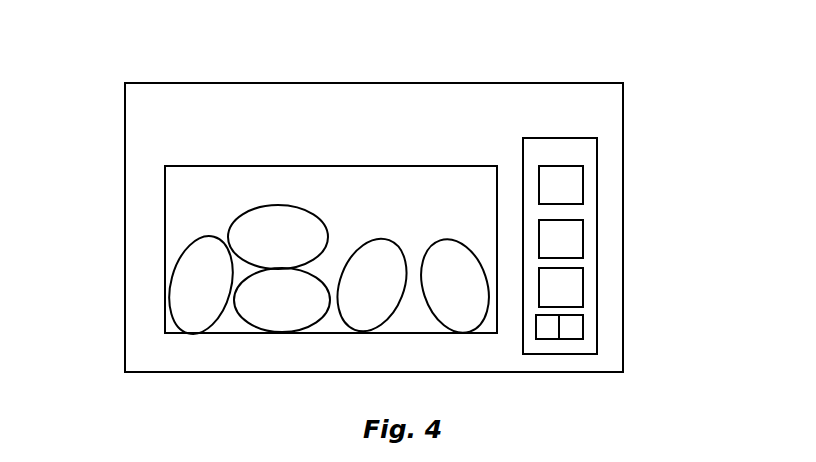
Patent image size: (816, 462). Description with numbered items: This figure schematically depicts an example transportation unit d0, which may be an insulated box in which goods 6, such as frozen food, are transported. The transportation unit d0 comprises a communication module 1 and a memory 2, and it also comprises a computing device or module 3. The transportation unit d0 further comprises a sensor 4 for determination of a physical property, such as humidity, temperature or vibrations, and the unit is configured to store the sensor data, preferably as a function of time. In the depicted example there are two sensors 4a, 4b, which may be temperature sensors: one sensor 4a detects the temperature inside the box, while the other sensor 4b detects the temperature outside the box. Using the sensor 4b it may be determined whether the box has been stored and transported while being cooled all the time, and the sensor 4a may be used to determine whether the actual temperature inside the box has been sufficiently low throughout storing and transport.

The transportation unit d0 is at (590, 105).
The communication module 1 is at (573, 187).
The memory 2 is at (570, 245).
The computing device or module 3 is at (570, 290).
The sensor 4 is at (583, 330).
The sensor 4a is at (546, 333).
The sensor 4b is at (580, 338).
The goods 6 is at (195, 275).